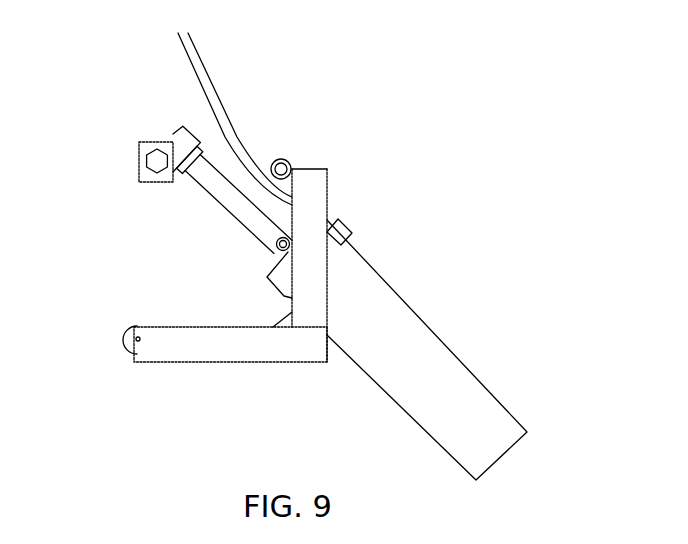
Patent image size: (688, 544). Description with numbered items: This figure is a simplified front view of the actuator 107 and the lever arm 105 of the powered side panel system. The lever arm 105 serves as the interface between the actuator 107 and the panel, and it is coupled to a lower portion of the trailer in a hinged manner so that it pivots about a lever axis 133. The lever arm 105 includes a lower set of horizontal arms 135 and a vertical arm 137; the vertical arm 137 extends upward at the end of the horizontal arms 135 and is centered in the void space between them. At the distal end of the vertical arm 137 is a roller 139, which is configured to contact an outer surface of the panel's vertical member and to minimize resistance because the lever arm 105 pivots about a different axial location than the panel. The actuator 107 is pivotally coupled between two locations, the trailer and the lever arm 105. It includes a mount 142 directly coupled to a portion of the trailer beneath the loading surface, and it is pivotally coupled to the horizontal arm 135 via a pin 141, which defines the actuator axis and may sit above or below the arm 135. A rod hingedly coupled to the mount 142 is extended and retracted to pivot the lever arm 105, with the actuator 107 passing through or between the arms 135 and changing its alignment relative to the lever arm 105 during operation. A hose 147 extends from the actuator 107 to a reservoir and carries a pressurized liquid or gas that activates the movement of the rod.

The lever arm 105 is at (146, 283).
The actuator 107 is at (415, 372).
The lever axis 133 is at (281, 159).
The horizontal arm 135 is at (315, 277).
The vertical arm 137 is at (193, 363).
The roller 139 is at (118, 340).
The pin 141 is at (277, 255).
The mount 142 is at (138, 162).
The hose 147 is at (212, 88).